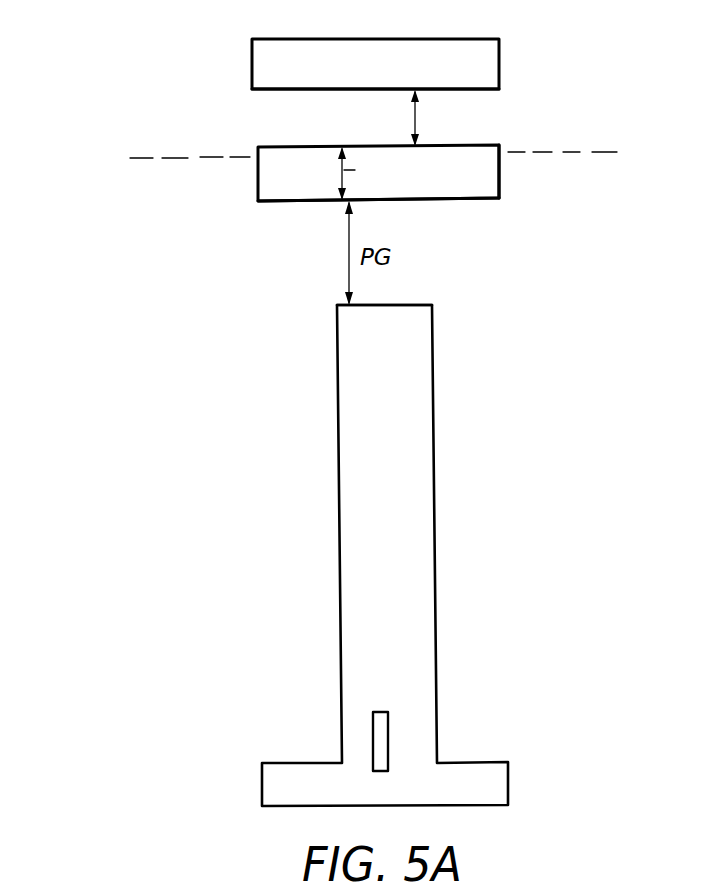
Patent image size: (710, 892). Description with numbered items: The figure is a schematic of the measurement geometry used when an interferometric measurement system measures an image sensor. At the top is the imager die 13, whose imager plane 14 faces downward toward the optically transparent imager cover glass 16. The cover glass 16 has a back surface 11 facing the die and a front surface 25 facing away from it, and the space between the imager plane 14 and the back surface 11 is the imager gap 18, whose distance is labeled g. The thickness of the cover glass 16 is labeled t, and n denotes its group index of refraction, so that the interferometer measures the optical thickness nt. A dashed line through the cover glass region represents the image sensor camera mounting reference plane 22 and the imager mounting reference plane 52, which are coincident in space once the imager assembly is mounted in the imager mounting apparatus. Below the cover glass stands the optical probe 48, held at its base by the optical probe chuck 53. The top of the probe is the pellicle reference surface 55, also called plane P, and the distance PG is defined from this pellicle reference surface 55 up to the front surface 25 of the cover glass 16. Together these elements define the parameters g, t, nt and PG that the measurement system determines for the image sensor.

The imager die 13 is at (516, 57).
The imager plane 14 is at (480, 89).
The imager gap 18 is at (418, 117).
The back surface of the imager cover glass 11 is at (258, 146).
The imager cover glass 16 is at (499, 177).
The front surface of the imager cover glass 25 is at (298, 203).
The image sensor camera mounting reference plane 22 is at (177, 158).
The imager mounting reference plane 52 is at (597, 152).
The optical probe 48 is at (424, 489).
The pellicle reference surface 55 is at (415, 305).
The optical probe chuck 53 is at (373, 720).